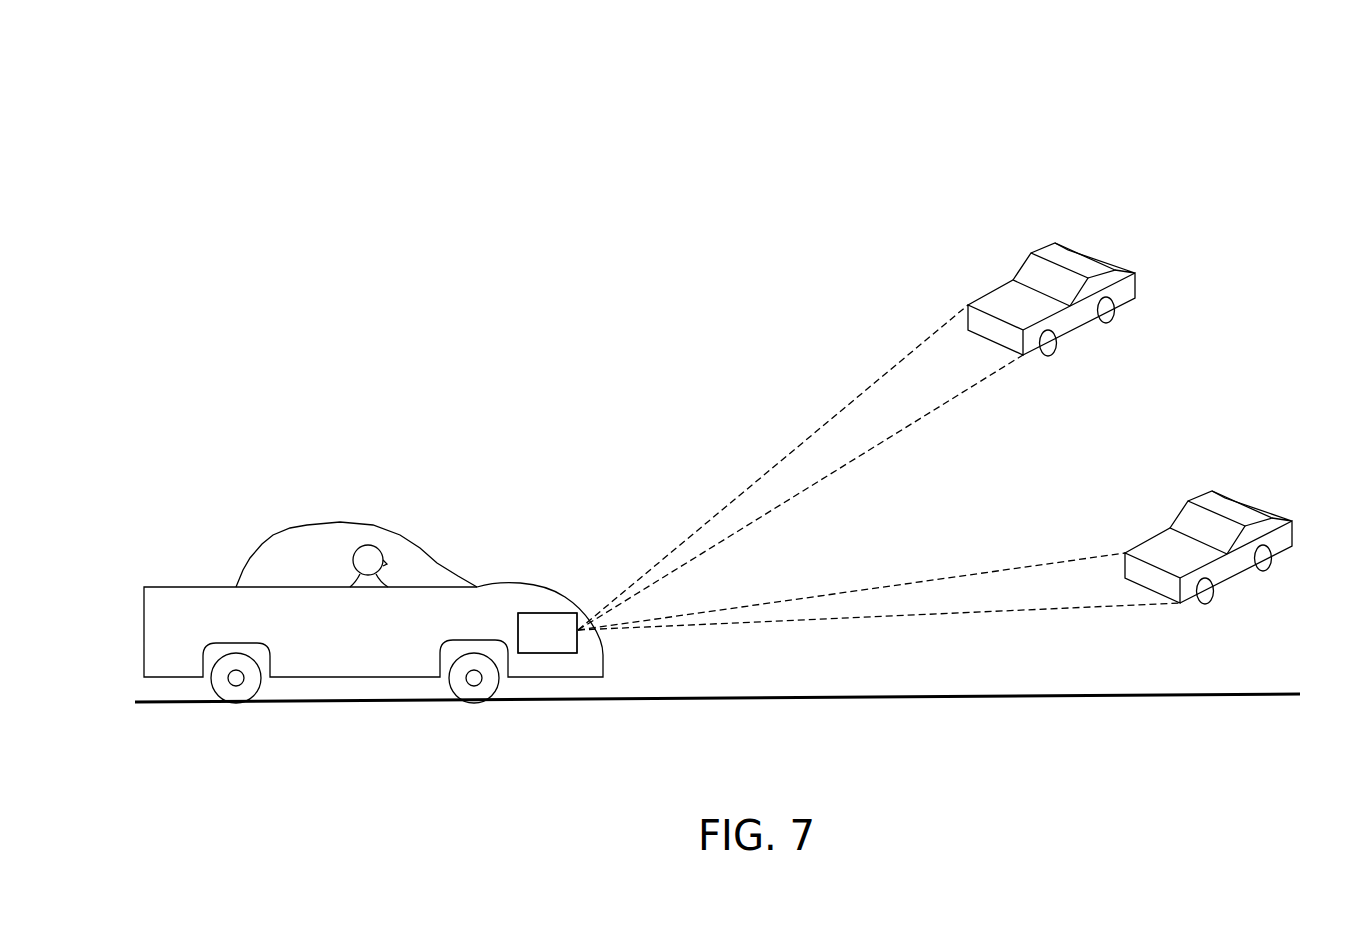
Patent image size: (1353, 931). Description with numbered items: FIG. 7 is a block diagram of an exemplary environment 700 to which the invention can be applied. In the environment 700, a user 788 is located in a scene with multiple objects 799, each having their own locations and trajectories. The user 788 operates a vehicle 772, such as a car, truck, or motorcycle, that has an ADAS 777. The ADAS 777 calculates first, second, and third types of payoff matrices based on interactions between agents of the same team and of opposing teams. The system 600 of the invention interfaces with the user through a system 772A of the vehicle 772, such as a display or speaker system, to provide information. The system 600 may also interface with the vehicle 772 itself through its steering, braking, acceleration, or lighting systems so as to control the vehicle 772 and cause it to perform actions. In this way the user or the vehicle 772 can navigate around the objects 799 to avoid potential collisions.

The environment 700 is at (235, 52).
The vehicle 772 is at (390, 637).
The system 772A is at (455, 575).
The user 788 is at (338, 557).
The system 600 is at (567, 643).
The ADAS 777 is at (547, 653).
The objects 799 is at (1035, 237).